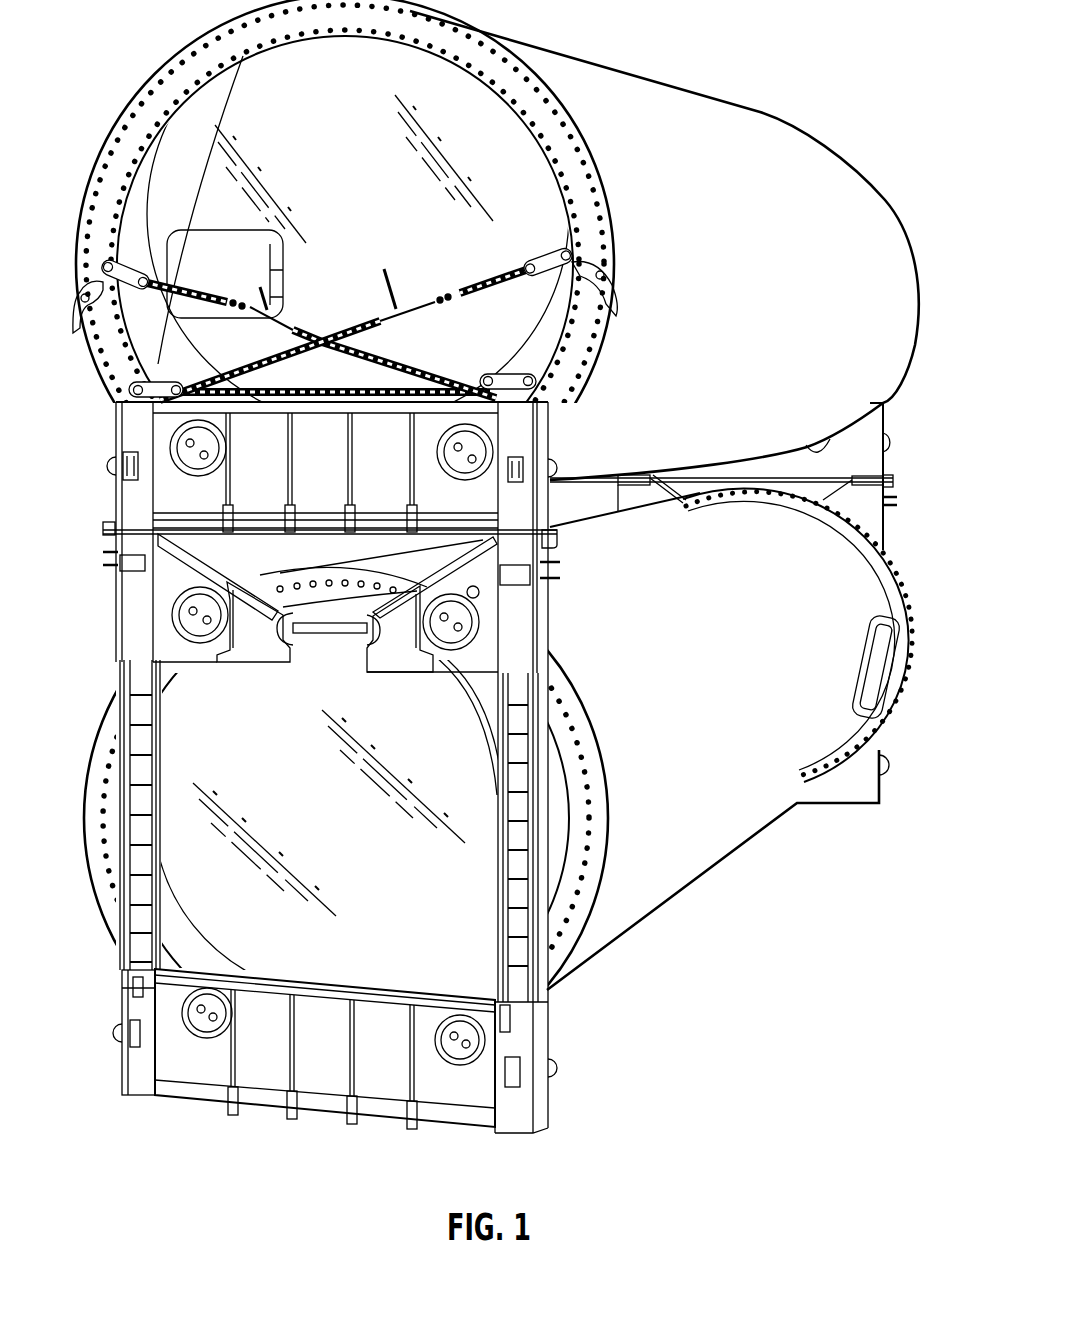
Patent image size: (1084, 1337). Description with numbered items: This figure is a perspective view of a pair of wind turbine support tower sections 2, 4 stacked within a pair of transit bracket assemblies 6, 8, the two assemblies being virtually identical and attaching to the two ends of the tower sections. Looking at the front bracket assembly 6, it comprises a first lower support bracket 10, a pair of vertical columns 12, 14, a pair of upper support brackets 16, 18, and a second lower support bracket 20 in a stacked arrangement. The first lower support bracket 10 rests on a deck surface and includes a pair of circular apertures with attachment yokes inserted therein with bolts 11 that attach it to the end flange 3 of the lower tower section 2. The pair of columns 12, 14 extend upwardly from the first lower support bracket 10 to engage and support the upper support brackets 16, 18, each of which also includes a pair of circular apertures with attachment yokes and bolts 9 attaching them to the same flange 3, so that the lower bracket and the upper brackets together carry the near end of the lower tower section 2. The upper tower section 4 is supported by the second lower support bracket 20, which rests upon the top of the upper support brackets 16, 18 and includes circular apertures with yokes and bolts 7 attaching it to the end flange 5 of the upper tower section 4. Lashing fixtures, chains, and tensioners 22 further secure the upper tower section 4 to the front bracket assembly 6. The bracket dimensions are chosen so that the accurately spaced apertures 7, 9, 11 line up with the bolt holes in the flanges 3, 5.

The lower tower section 2 is at (708, 838).
The end flange 3 is at (598, 770).
The upper tower section 4 is at (906, 382).
The end flange 5 is at (570, 102).
The front bracket assembly 6 is at (588, 540).
The circular apertures with attachment yokes and bolts 7 is at (190, 442).
The transit bracket assembly 8 is at (897, 481).
The circular apertures with attachment yokes and bolts 9 is at (190, 614).
The first lower support bracket 10 is at (120, 1060).
The circular apertures with attachment yokes and bolts 11 is at (207, 1030).
The vertical column 12 is at (125, 966).
The vertical column 14 is at (545, 722).
The upper support bracket 16 is at (115, 636).
The upper support bracket 18 is at (552, 636).
The second lower support bracket 20 is at (115, 495).
The lashing fixtures, chains, and tensioners 22 is at (243, 302).